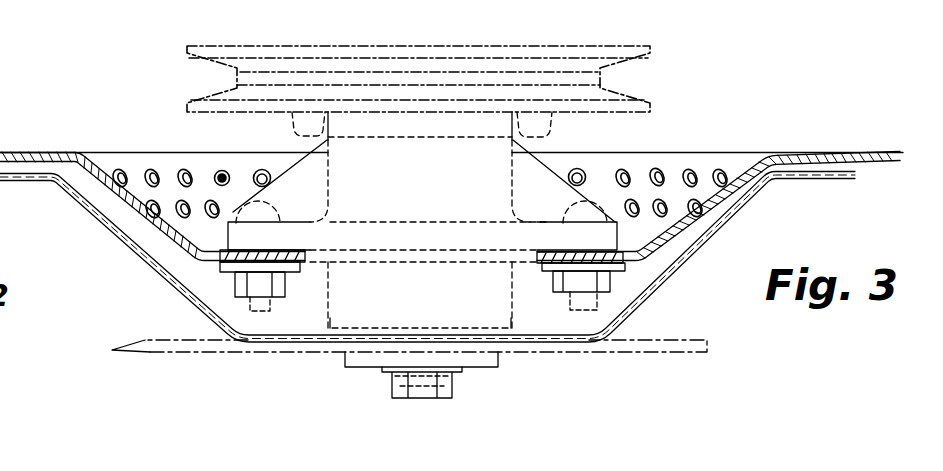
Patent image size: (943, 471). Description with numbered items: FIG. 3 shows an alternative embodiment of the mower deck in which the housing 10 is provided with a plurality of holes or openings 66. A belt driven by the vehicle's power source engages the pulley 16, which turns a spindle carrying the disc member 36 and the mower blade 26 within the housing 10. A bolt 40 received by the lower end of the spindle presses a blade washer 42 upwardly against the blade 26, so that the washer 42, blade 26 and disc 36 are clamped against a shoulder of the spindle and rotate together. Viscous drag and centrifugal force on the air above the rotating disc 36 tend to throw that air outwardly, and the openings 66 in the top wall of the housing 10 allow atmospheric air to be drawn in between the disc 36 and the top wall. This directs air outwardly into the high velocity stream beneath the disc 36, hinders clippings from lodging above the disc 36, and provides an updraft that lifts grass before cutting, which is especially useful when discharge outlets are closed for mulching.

The housing 10 is at (825, 150).
The pulley 16 is at (638, 50).
The mower blade 26 is at (645, 353).
The disc member 36 is at (814, 183).
The bolt 40 is at (390, 385).
The blade washer 42 is at (500, 357).
The openings 66 is at (212, 200).